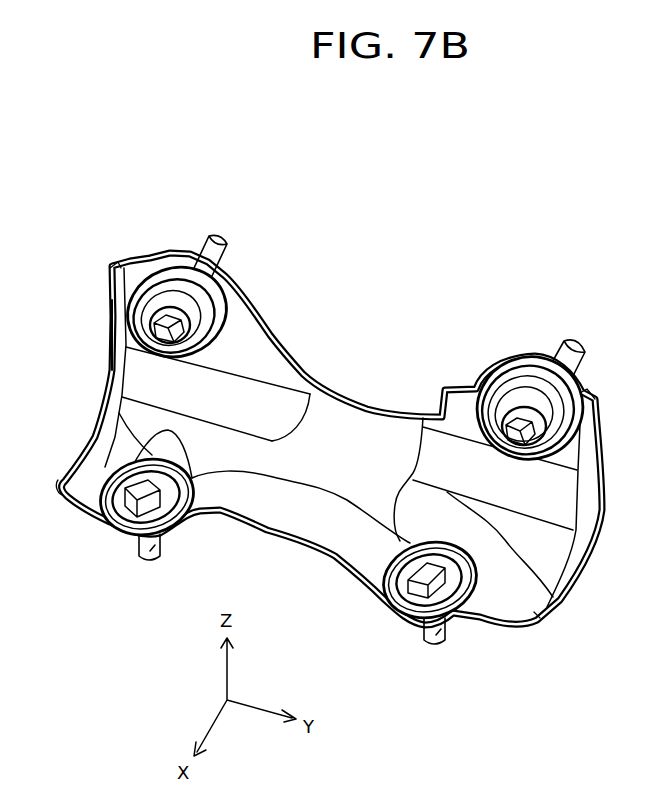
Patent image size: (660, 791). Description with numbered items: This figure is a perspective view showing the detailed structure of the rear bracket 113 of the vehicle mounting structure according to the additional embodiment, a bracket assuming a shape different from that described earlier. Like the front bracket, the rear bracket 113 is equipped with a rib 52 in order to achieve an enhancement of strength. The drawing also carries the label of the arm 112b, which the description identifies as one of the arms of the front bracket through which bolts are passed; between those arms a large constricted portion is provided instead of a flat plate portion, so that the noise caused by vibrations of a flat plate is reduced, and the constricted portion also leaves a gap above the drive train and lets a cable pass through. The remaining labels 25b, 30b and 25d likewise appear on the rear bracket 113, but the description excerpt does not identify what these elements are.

The rear bracket 113 is at (392, 260).
The upper fastening bolt 25b is at (217, 247).
The rubber bush 30b is at (193, 318).
The lower fastening bolt 25d is at (142, 560).
The rib 52 is at (63, 483).
The arm 112b is at (0, 423).